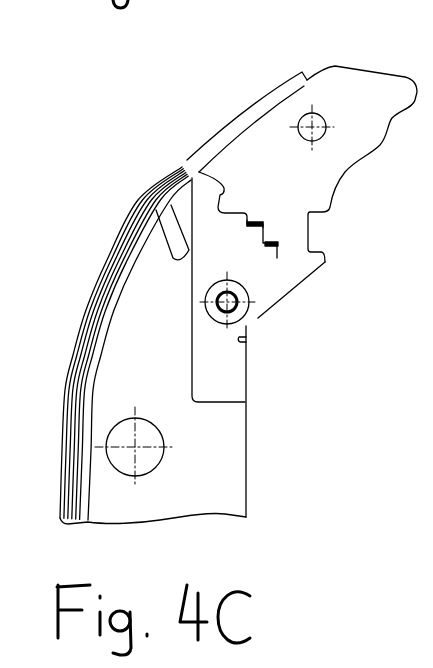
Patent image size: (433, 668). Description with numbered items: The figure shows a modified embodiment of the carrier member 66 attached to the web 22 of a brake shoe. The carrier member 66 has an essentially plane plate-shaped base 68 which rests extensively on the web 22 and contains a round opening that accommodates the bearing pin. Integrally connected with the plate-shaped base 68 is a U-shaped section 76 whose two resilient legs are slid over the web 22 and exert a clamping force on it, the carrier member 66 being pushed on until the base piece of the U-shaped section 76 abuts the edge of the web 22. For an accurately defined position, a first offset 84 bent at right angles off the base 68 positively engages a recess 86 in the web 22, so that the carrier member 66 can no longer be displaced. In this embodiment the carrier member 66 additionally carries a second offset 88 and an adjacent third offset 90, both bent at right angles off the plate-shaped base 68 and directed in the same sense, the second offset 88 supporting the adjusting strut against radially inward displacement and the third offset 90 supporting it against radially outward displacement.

The web 22 is at (156, 366).
The carrier member 66 is at (281, 333).
The plate-shaped base 68 is at (234, 265).
The U-shaped section 76 is at (227, 372).
The offset 84 is at (180, 167).
The recess 86 is at (188, 160).
The second offset 88 is at (247, 327).
The third offset 90 is at (258, 223).